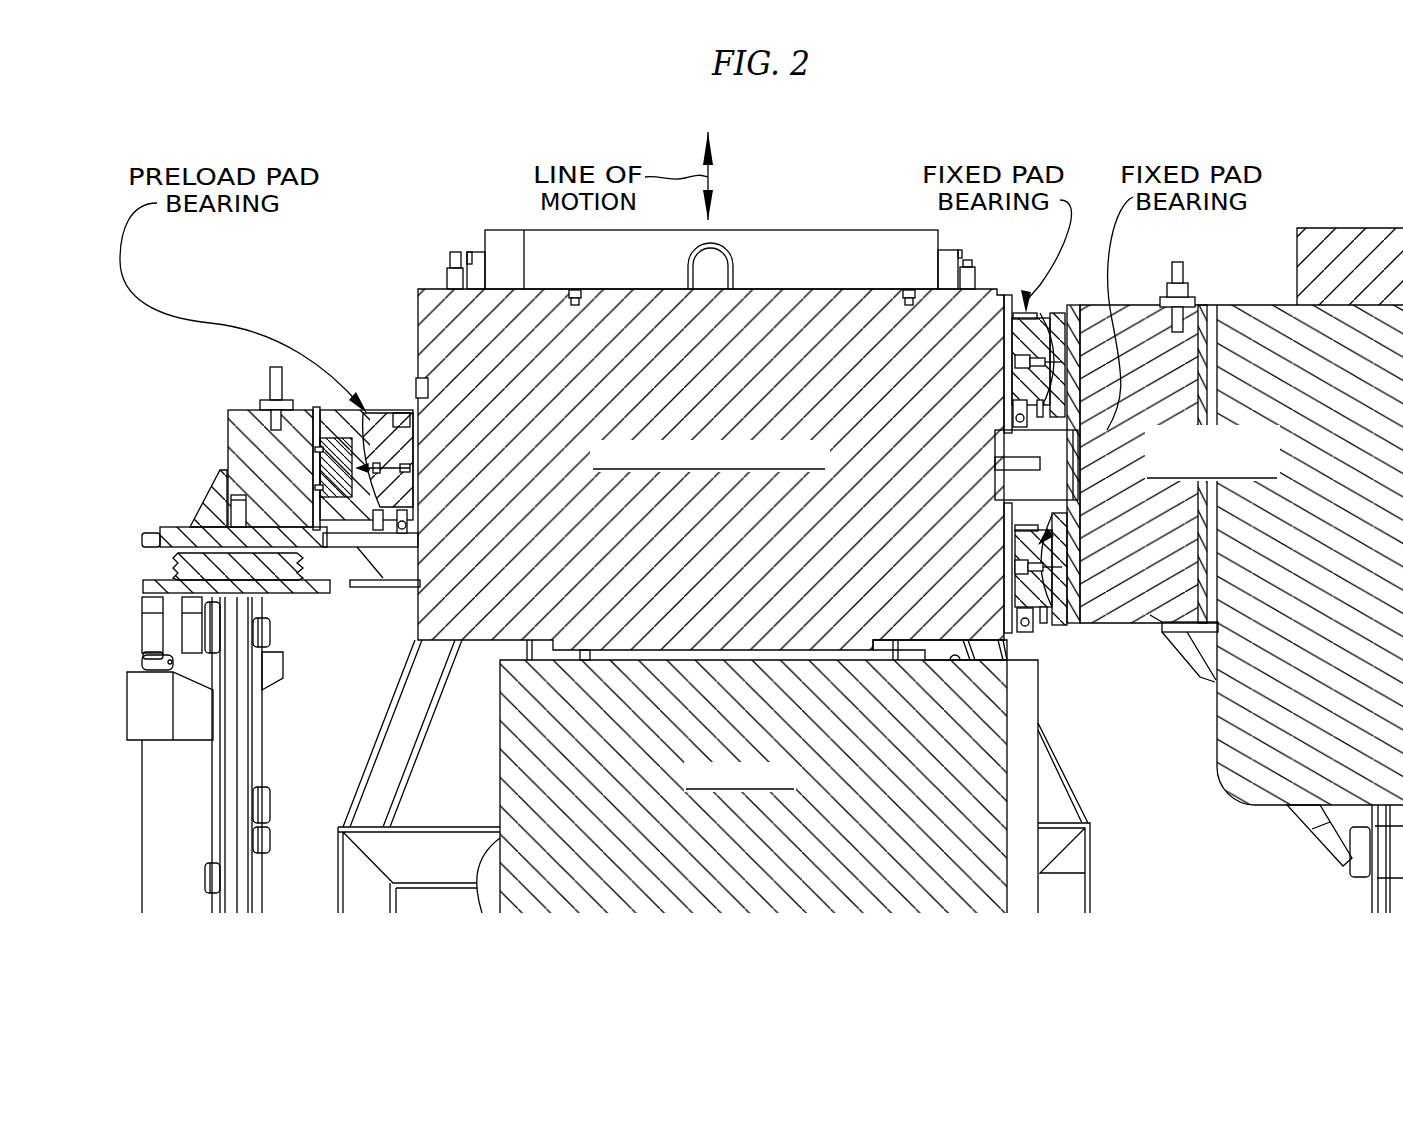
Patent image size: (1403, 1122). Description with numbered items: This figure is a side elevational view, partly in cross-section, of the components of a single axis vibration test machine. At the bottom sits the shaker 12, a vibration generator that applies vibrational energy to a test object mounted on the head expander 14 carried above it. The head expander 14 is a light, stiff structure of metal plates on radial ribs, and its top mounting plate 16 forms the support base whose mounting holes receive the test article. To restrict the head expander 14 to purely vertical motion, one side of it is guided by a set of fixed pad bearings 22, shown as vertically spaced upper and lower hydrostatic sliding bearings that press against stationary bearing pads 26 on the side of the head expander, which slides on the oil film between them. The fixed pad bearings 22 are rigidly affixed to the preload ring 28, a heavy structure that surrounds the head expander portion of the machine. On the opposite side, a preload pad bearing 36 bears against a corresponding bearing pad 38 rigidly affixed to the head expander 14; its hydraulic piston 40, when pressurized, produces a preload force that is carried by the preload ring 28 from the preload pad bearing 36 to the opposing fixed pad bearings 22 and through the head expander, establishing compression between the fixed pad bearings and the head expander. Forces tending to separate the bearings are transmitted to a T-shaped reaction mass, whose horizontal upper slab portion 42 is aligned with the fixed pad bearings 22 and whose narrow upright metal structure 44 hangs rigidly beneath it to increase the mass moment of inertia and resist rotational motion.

The shaker 12 is at (500, 768).
The head expander 14 is at (418, 305).
The top mounting plate 16 is at (773, 230).
The fixed pad bearings 22 is at (1047, 310).
The bearing pads 26 is at (1007, 307).
The preload ring 28 is at (1127, 313).
The preload pad bearings 36 is at (390, 417).
The bearing pads 38 is at (417, 403).
The hydraulic piston 40 is at (317, 413).
The upper slab portion 42 is at (1297, 253).
The upright metal structure 44 is at (1217, 743).